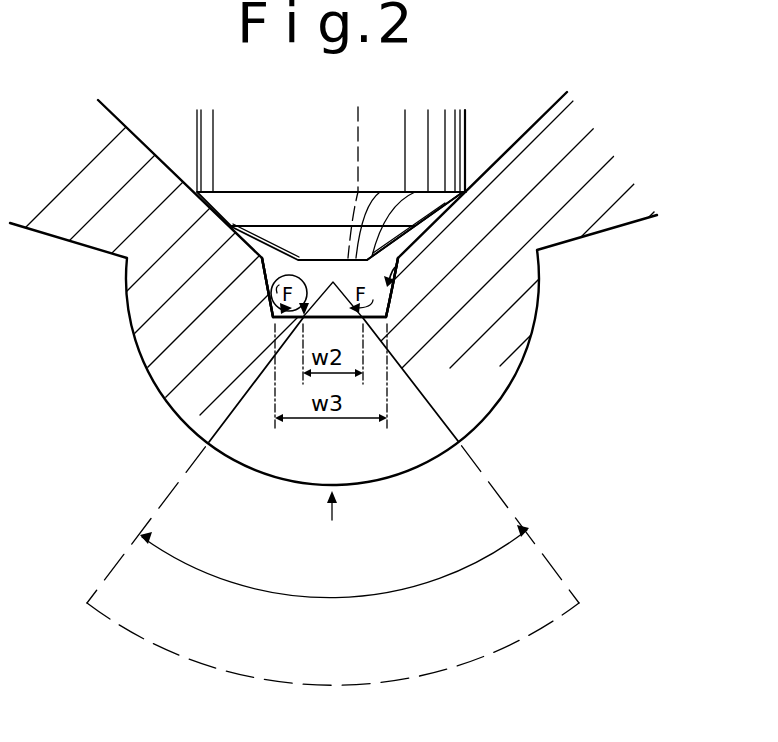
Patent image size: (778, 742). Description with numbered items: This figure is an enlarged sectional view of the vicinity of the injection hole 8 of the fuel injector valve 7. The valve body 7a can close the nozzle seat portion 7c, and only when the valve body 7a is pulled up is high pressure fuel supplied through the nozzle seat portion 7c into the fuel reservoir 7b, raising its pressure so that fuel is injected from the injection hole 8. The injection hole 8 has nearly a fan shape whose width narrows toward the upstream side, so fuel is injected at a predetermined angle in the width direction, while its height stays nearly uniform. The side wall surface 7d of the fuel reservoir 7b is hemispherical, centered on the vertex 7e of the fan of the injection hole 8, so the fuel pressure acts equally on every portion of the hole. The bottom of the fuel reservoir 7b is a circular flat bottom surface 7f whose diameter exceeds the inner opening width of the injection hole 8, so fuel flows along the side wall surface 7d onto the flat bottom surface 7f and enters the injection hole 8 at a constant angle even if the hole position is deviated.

The fuel injector valve 7 is at (571, 174).
The valve body 7a is at (376, 133).
The fuel reservoir 7b is at (368, 256).
The nozzle seat portion 7c is at (455, 215).
The side wall surface 7d is at (398, 268).
The vertex 7e is at (312, 270).
The flat bottom surface 7f is at (268, 262).
The injection hole 8 is at (397, 428).